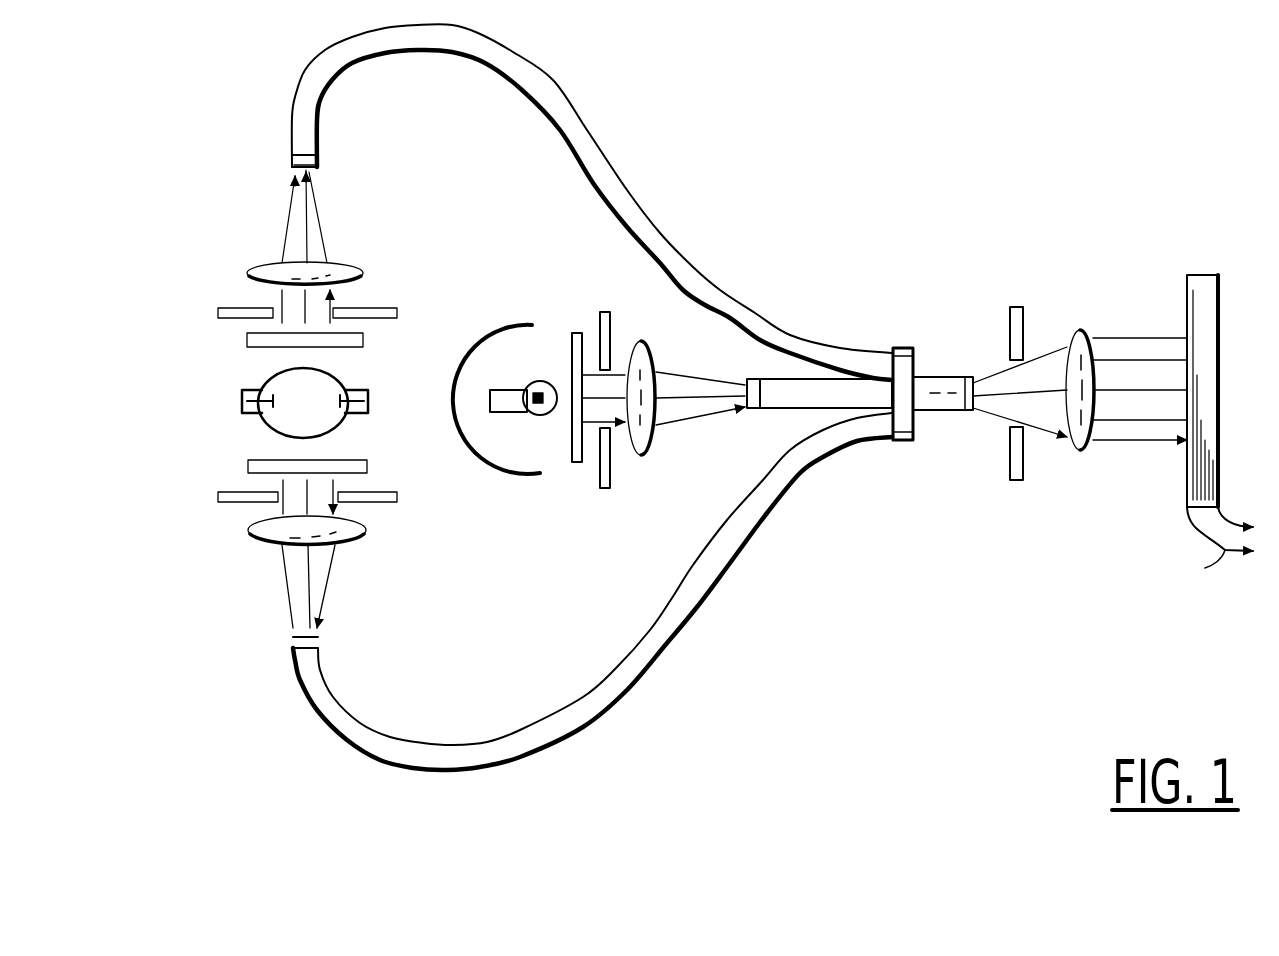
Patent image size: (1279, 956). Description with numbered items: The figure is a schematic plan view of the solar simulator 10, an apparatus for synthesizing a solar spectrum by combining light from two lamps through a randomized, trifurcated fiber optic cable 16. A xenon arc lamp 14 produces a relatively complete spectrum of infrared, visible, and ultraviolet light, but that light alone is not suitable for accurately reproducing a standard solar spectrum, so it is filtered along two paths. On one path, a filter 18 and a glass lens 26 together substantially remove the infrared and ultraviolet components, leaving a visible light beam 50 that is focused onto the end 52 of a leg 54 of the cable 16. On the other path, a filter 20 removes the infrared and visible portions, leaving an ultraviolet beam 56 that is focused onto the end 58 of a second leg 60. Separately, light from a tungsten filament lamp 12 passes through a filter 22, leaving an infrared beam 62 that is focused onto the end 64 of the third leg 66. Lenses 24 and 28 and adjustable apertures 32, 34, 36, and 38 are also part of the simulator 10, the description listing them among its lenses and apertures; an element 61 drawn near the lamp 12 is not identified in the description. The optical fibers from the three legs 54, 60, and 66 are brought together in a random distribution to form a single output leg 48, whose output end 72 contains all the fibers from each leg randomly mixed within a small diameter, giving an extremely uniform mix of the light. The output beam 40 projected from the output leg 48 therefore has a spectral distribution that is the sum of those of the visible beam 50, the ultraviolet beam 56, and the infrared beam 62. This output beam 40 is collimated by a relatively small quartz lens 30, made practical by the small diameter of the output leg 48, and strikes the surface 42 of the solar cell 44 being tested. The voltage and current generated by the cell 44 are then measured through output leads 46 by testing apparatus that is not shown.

The solar simulator 10 is at (792, 78).
The tungsten filament lamp 12 is at (521, 383).
The xenon arc lamp 14 is at (347, 380).
The randomized, trifurcated fiber optic cable 16 is at (729, 285).
The filter 18 is at (248, 466).
The filter 20 is at (247, 338).
The filter 22 is at (576, 462).
The lens 24 is at (358, 266).
The glass lens 26 is at (366, 538).
The lens 28 is at (653, 450).
The lens 30 is at (1080, 452).
The adjustable aperture 32 is at (218, 497).
The adjustable aperture 34 is at (218, 313).
The adjustable aperture 36 is at (605, 489).
The adjustable aperture 38 is at (1017, 481).
The output beam 40 is at (1040, 432).
The surface 42 is at (1187, 292).
The solar cell 44 is at (1204, 270).
The output leads 46 is at (1232, 560).
The output leg 48 is at (933, 377).
The visible light beam 50 is at (338, 505).
The end 52 is at (322, 630).
The leg 54 is at (365, 718).
The ultraviolet beam 56 is at (338, 310).
The end 58 is at (318, 176).
The leg 60 is at (319, 127).
The reflector 61 is at (490, 326).
The infrared beam 62 is at (613, 370).
The end 64 is at (748, 407).
The leg 66 is at (787, 378).
The output end 72 is at (973, 425).